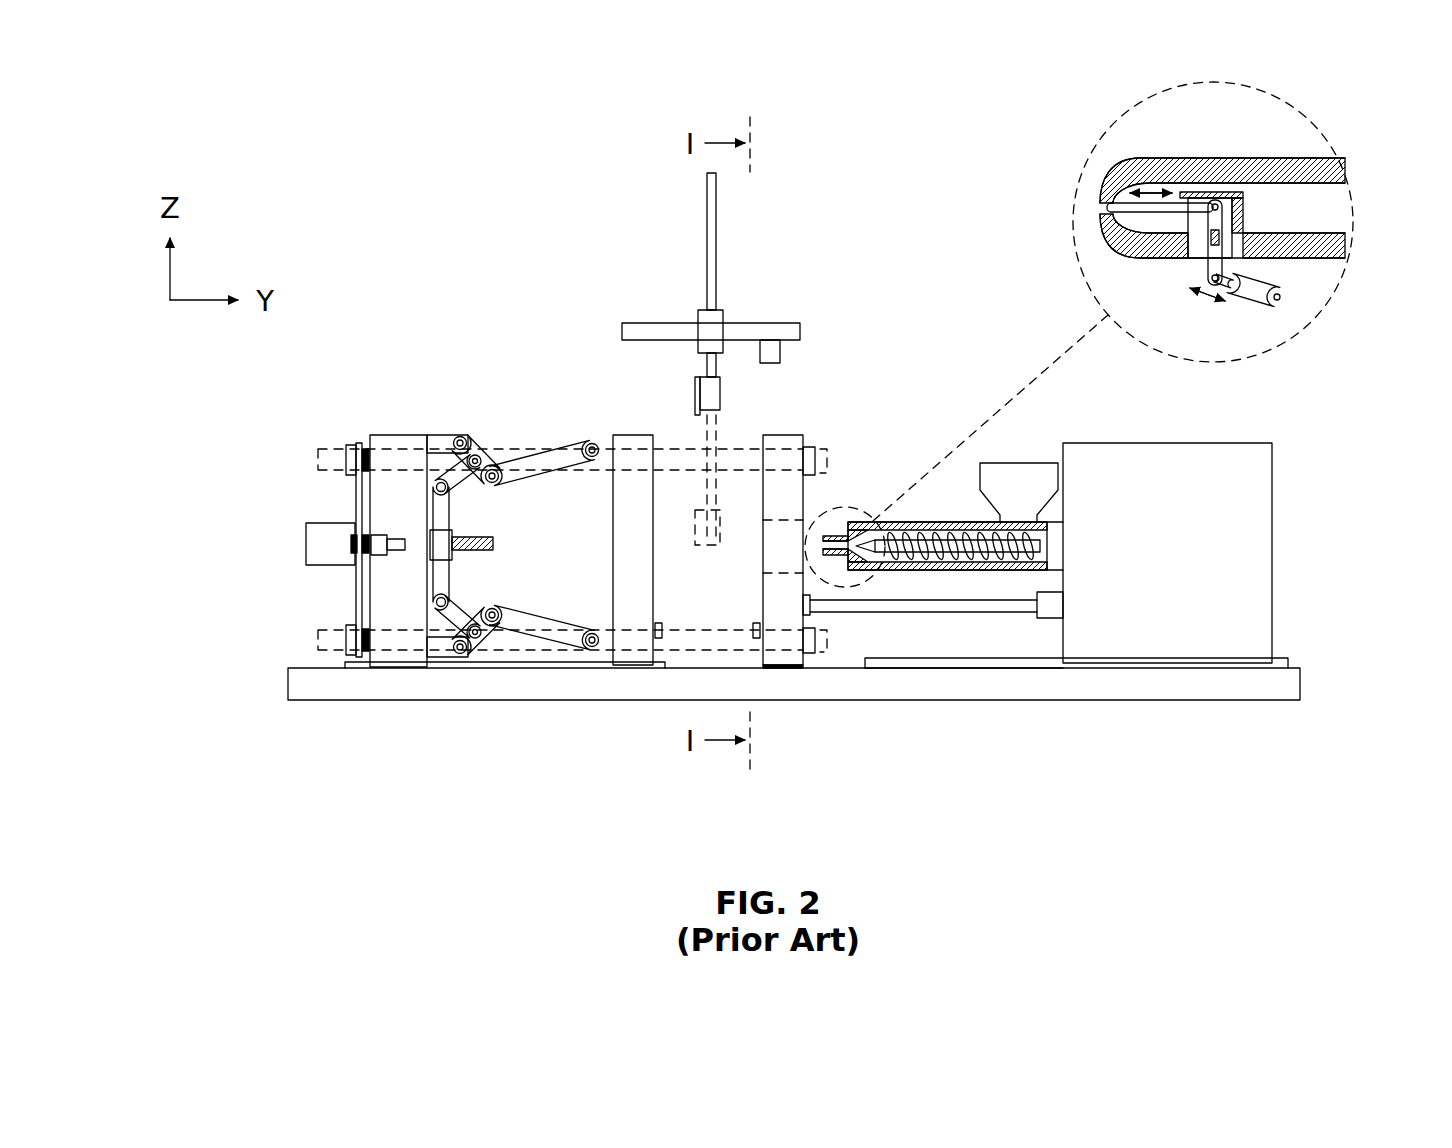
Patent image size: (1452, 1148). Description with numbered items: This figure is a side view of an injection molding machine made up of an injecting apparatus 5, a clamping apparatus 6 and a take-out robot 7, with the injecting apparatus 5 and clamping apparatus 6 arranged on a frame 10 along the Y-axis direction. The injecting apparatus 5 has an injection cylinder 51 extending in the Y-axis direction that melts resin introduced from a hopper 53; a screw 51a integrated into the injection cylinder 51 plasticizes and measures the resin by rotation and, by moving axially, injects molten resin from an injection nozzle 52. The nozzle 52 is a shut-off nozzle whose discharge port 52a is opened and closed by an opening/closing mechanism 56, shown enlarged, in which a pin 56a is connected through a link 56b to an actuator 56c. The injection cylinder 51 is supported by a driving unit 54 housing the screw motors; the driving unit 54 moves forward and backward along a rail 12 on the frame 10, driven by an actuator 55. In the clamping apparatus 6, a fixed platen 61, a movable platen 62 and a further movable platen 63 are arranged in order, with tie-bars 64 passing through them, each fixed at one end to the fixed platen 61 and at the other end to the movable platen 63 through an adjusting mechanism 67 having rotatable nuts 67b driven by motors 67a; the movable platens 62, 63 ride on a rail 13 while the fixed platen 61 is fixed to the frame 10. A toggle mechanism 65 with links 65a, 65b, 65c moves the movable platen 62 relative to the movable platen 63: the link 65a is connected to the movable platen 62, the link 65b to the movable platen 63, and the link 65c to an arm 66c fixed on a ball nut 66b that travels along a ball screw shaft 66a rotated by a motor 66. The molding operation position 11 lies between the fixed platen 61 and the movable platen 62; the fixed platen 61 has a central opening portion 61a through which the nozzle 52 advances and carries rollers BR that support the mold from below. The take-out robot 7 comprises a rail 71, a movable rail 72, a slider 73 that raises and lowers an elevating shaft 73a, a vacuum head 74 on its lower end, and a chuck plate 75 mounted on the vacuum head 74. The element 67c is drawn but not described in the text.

The injecting apparatus 5 is at (1104, 417).
The clamping apparatus 6 is at (506, 365).
The take-out robot 7 is at (719, 359).
The frame 10 is at (1267, 703).
The molding operation position 11 is at (727, 486).
The rail 12 is at (978, 663).
The rail 13 is at (513, 665).
The injection cylinder 51 is at (992, 568).
The screw 51a is at (925, 550).
The injection nozzle 52 is at (847, 530).
The discharge port 52a is at (1103, 207).
The hopper 53 is at (1020, 462).
The driving unit 54 is at (1272, 575).
The actuator 55 is at (1043, 627).
The opening/closing mechanism 56 is at (1209, 236).
The pin 56a is at (1140, 208).
The link 56b is at (1223, 225).
The actuator 56c is at (1250, 298).
The fixed platen 61 is at (795, 665).
The opening portion 61a is at (800, 518).
The movable platen 62 is at (622, 662).
The movable platen 63 is at (382, 662).
The tie-bars 64 is at (317, 466).
The toggle mechanism 65 is at (497, 547).
The link 65a is at (557, 460).
The link 65b is at (480, 447).
The link 65c is at (448, 473).
The motor 66 is at (307, 543).
The ball screw shaft 66a is at (498, 543).
The ball nut 66b is at (438, 545).
The arm 66c is at (450, 522).
The adjusting mechanism 67 is at (353, 426).
The motors 67a is at (377, 530).
The nuts 67b is at (352, 443).
The motor shaft coupling 67c is at (357, 572).
The rail 71 is at (787, 350).
The movable rail 72 is at (753, 322).
The slider 73 is at (699, 310).
The elevating shaft 73a is at (718, 233).
The vacuum head 74 is at (722, 403).
The chuck plate 75 is at (697, 387).
The rollers BR is at (657, 625).